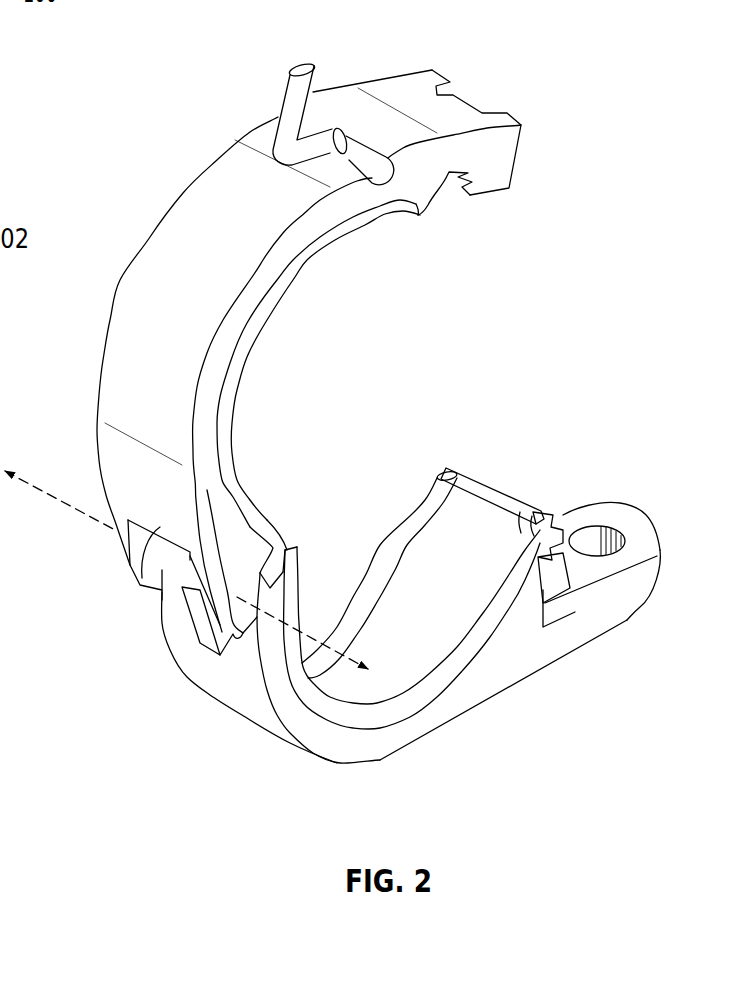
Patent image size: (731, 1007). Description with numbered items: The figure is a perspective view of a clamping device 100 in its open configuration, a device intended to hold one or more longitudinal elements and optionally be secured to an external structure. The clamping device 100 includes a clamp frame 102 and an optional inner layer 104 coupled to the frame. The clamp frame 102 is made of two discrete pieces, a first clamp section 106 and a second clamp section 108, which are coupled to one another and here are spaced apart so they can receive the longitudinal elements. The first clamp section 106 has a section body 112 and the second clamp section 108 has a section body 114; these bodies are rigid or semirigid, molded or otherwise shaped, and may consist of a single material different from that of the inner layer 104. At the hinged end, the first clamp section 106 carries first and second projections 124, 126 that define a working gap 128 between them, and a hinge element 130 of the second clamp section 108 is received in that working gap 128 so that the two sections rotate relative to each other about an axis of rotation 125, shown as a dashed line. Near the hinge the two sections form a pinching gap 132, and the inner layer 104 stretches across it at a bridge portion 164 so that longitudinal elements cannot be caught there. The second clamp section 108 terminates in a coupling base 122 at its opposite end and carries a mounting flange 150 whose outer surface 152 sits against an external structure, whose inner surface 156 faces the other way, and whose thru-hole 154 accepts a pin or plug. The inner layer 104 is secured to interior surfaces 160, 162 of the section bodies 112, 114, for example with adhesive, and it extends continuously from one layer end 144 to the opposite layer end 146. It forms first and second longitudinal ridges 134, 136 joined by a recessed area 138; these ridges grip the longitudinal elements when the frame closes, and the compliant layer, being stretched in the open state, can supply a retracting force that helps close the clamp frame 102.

The clamping device 100 is at (610, 62).
The clamp frame 102 is at (147, 198).
The inner layer 104 is at (367, 657).
The first clamp section 106 is at (233, 182).
The second clamp section 108 is at (512, 655).
The section body 112 is at (128, 297).
The section body 114 is at (473, 688).
The coupling base 122 is at (557, 510).
The first projection 124 is at (135, 568).
The axis of rotation 125 is at (35, 484).
The second projection 126 is at (243, 617).
The working gap 128 is at (152, 598).
The hinge element 130 is at (172, 567).
The pinching gap 132 is at (286, 558).
The first longitudinal ridge 134 is at (430, 507).
The second longitudinal ridge 136 is at (521, 517).
The recessed area 138 is at (420, 613).
The layer end 144 is at (448, 468).
The layer end 146 is at (432, 209).
The mounting flange 150 is at (623, 622).
The outer surface 152 is at (598, 640).
The thru-hole 154 is at (598, 548).
The inner surface 156 is at (630, 556).
The interior surface 160 is at (352, 218).
The interior surface 162 is at (495, 627).
The bridge portion 164 is at (272, 563).